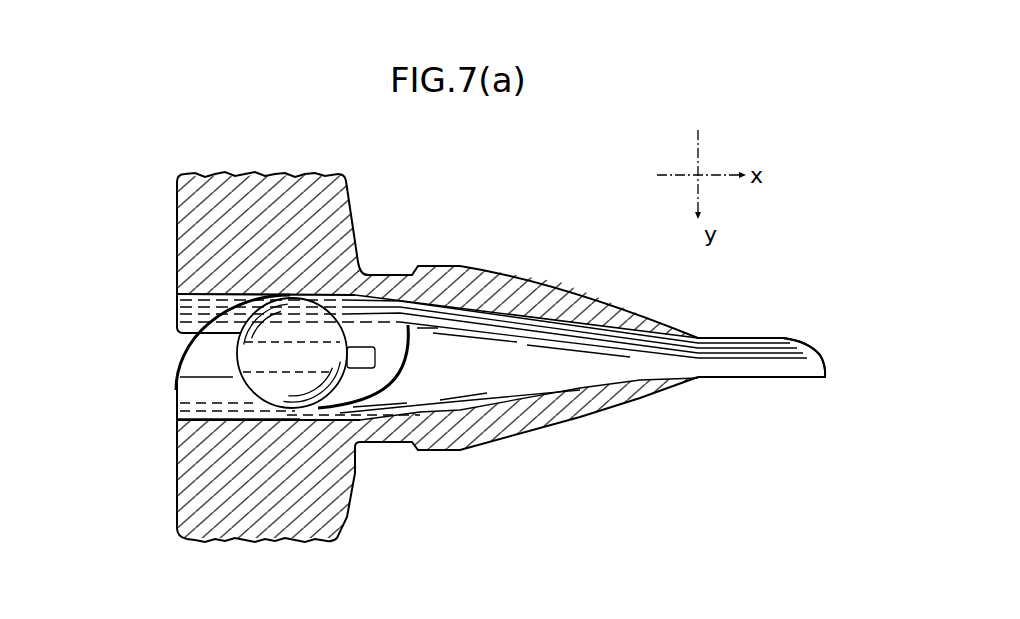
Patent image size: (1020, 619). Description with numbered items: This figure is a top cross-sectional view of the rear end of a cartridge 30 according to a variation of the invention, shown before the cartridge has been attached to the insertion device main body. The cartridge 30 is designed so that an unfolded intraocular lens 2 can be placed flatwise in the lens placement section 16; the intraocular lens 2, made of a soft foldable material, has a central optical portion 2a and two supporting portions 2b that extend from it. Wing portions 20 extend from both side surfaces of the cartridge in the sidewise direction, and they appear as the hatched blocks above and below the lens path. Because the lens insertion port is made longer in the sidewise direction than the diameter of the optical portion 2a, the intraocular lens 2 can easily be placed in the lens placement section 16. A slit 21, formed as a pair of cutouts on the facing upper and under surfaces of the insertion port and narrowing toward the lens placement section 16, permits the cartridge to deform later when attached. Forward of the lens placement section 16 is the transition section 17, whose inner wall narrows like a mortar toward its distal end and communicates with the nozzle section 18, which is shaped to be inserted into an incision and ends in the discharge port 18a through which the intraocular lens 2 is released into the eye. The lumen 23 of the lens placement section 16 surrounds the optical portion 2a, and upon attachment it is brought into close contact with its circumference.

The intraocular lens 2 is at (243, 388).
The optical portion 2a is at (318, 323).
The supporting portion 2b is at (222, 326).
The lens placement section 16 is at (233, 330).
The transition section 17 is at (517, 357).
The nozzle section 18 is at (738, 358).
The discharge port 18a is at (808, 358).
The wing portion 20 is at (257, 173).
The slit 21 is at (208, 358).
The lumen 23 is at (265, 416).
The cartridge 30 is at (492, 197).